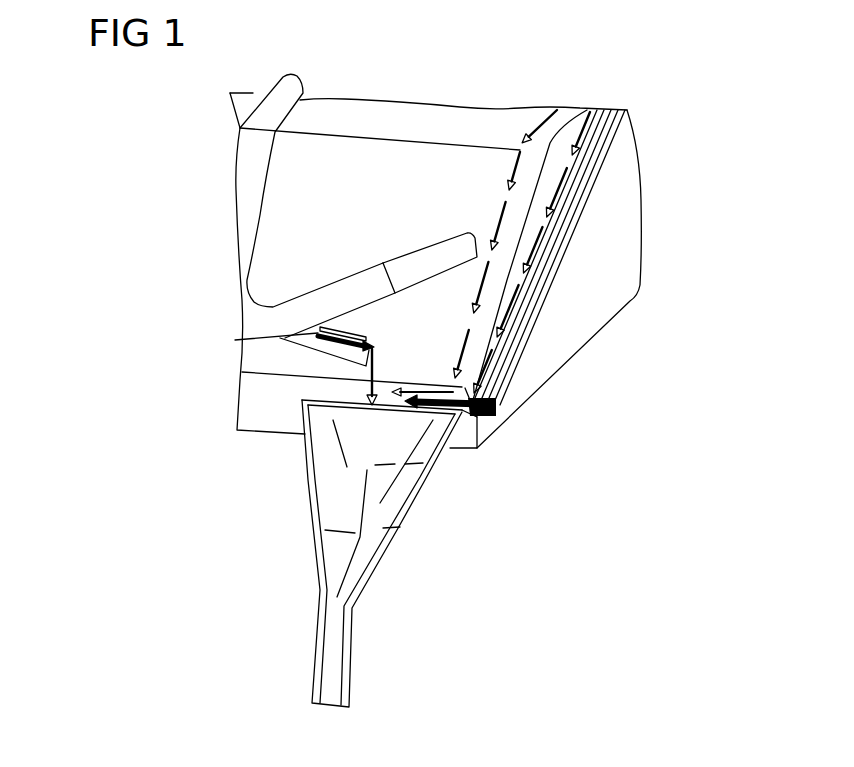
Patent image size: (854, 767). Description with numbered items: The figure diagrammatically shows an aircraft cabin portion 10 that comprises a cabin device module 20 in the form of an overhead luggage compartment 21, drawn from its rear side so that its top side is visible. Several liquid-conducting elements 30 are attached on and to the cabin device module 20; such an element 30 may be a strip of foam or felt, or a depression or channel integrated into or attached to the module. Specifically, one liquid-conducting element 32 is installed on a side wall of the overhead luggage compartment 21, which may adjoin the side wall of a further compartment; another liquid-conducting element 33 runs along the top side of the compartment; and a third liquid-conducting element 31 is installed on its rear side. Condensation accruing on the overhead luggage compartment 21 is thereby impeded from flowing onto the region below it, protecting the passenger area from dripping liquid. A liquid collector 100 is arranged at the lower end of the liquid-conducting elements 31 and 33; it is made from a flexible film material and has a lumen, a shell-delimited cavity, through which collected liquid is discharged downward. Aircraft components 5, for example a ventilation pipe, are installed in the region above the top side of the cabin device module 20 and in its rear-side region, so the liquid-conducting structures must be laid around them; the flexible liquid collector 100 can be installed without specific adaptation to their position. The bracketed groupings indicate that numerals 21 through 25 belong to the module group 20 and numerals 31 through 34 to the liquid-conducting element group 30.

The aircraft cabin portion 10 is at (185, 125).
The aircraft component 5 is at (240, 195).
The overhead luggage compartment 21 is at (625, 198).
The liquid-conducting element 32 is at (543, 293).
The liquid-conducting element 31 is at (483, 418).
The liquid-conducting element 33 is at (313, 345).
The liquid collector 100 is at (385, 528).
The liquid-conducting element 30 is at (115, 670).
The flow channel 34 is at (101, 660).
The cabin device module 20 is at (632, 673).
The separation stage 25 is at (616, 660).